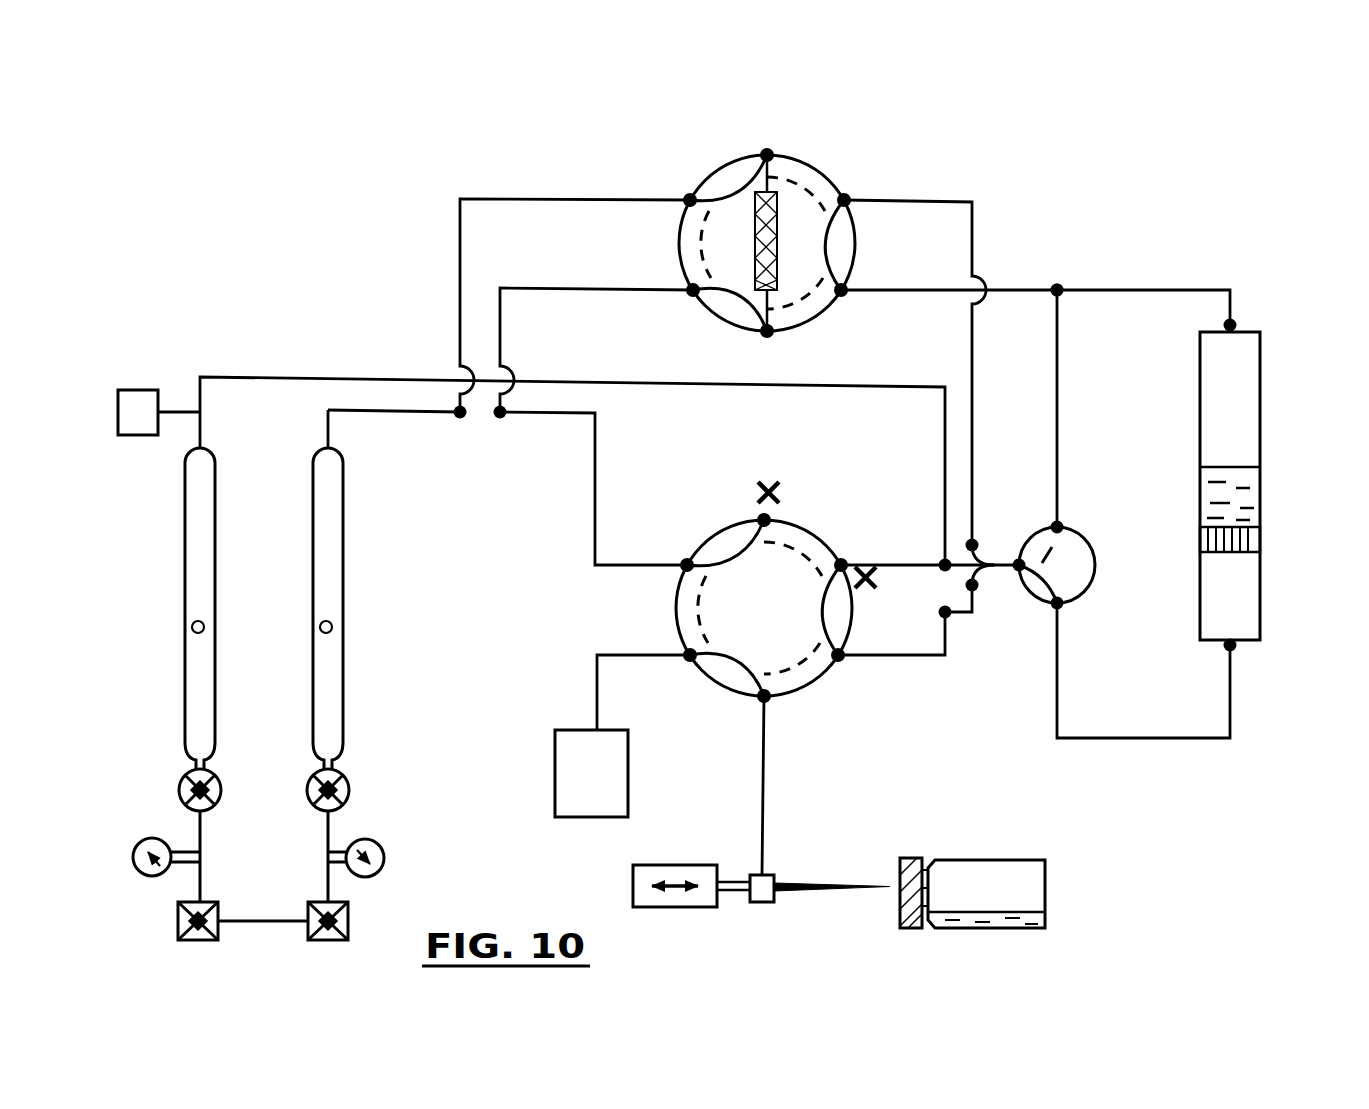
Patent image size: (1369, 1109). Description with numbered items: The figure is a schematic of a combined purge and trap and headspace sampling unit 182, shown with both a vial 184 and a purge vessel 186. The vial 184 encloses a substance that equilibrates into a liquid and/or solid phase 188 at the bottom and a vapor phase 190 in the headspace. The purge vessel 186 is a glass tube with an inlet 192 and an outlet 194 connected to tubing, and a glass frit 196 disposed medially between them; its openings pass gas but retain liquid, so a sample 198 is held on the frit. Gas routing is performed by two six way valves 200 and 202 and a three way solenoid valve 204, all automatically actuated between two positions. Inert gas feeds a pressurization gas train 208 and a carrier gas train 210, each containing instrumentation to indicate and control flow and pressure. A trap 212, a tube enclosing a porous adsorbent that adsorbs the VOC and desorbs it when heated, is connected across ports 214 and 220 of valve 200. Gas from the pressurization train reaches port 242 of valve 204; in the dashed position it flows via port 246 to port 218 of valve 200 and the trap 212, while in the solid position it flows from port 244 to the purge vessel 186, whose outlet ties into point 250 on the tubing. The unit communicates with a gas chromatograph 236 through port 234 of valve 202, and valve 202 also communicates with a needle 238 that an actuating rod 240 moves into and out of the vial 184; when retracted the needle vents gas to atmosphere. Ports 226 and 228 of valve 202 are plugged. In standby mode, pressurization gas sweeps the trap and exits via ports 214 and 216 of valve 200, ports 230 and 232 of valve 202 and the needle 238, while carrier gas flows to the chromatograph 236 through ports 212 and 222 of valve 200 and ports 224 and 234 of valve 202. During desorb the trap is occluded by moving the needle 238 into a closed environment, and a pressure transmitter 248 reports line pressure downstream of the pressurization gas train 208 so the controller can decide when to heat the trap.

The headspace sampling unit 182 is at (410, 252).
The vial 184 is at (1042, 853).
The purge vessel 186 is at (1214, 454).
The liquid and/or solid phase 188 is at (1030, 926).
The vapor phase 190 is at (1015, 880).
The inlet 192 is at (1214, 645).
The outlet 194 is at (1240, 322).
The glass frit 196 is at (1250, 540).
The sample 198 is at (1203, 490).
The six way valve 200 is at (736, 152).
The six way valve 202 is at (815, 520).
The three way solenoid valve 204 is at (1097, 565).
The pressurization gas train 208 is at (219, 654).
The carrier gas train 210 is at (350, 638).
The trap 212 is at (690, 200).
The port 214 is at (767, 155).
The port 216 is at (844, 200).
The port 218 is at (841, 290).
The port 220 is at (767, 331).
The port 222 is at (693, 290).
The port 224 is at (687, 565).
The port 226 is at (764, 520).
The port 228 is at (841, 565).
The port 230 is at (838, 655).
The port 232 is at (764, 696).
The port 234 is at (690, 655).
The gas chromatograph 236 is at (555, 760).
The needle 238 is at (800, 883).
The actuating rod 240 is at (676, 865).
The port 242 is at (1019, 565).
The port 244 is at (1057, 603).
The port 246 is at (1057, 527).
The pressure transmitter 248 is at (140, 390).
The point 250 is at (1057, 290).